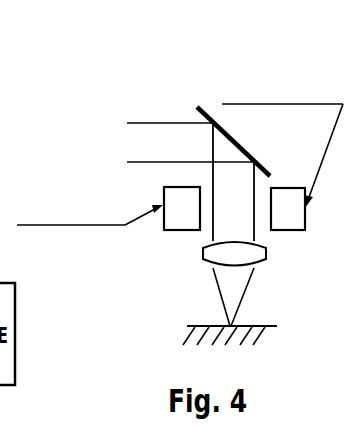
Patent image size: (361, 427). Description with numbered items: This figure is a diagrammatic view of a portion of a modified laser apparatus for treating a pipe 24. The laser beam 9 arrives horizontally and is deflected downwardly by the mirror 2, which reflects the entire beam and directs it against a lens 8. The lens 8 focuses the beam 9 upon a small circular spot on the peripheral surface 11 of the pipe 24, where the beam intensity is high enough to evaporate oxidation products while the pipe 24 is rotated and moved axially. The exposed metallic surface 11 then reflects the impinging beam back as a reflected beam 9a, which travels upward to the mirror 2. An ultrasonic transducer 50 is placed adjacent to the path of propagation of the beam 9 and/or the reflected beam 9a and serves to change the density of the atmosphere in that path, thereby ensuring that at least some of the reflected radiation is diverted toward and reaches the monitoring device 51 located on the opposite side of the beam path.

The mirror 2 is at (233, 136).
The beam 9 is at (223, 224).
The reflected beam 9a is at (240, 183).
The lens 8 is at (258, 254).
The peripheral surface 11 is at (263, 327).
The pipe 24 is at (265, 333).
The ultrasonic transducer 50 is at (296, 220).
The monitoring device 51 is at (176, 220).